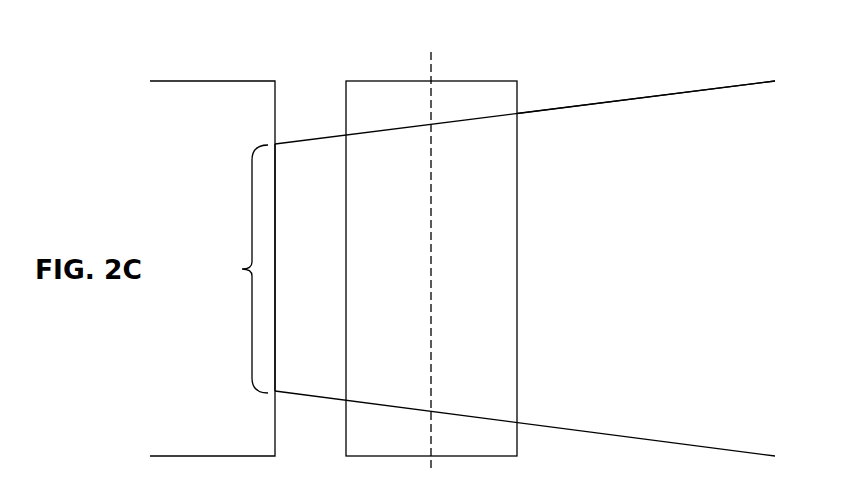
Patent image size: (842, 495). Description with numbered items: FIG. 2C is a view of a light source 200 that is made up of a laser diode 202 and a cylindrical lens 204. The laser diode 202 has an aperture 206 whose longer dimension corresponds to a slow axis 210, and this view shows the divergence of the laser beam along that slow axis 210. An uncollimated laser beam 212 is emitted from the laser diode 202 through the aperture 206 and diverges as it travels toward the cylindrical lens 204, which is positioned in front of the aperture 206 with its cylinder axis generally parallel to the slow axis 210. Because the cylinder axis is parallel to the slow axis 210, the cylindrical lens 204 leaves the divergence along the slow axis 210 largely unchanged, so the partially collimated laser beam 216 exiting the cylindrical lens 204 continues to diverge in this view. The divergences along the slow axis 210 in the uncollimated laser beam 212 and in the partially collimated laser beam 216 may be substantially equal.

The light source 200 is at (697, 269).
The laser diode 202 is at (205, 81).
The cylindrical lens 204 is at (488, 278).
The aperture 206 is at (275, 268).
The slow axis 210 is at (235, 269).
The uncollimated laser beam 212 is at (305, 143).
The partially collimated laser beam 216 is at (556, 108).